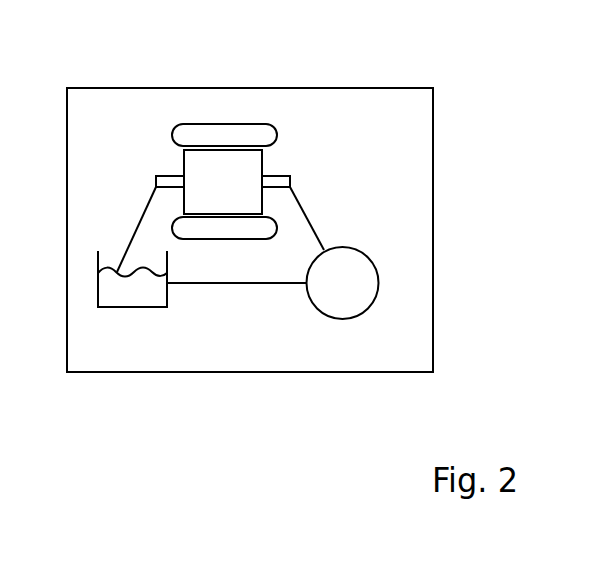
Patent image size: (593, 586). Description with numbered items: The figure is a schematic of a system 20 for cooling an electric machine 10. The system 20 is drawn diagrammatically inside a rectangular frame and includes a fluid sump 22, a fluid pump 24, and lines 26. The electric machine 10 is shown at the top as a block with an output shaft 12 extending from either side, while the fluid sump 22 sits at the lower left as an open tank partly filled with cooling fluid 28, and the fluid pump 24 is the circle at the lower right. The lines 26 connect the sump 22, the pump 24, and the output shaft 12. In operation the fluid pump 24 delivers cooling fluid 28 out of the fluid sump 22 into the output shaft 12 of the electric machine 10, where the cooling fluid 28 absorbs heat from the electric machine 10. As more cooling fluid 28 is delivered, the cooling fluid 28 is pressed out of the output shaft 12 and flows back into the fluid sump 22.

The electric machine 10 is at (282, 113).
The output shaft 12 is at (172, 176).
The system 20 is at (250, 88).
The fluid sump 22 is at (138, 307).
The fluid pump 24 is at (322, 313).
The lines 26 is at (262, 283).
The cooling fluid 28 is at (110, 293).